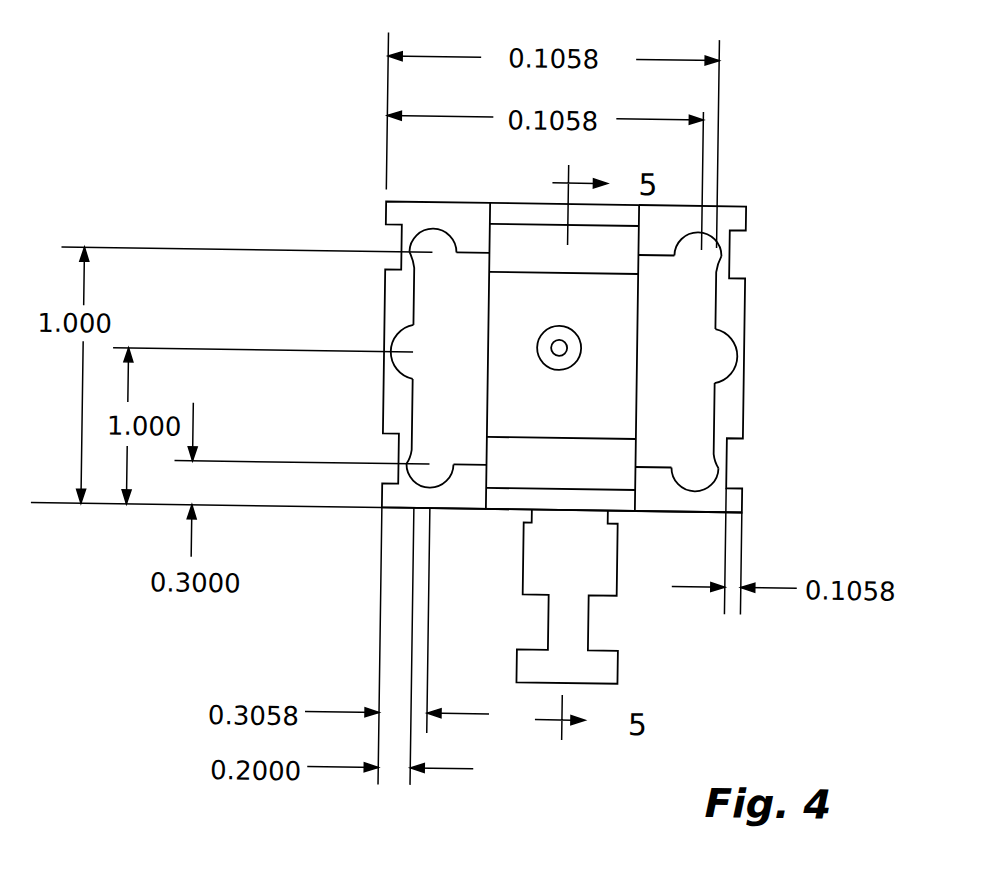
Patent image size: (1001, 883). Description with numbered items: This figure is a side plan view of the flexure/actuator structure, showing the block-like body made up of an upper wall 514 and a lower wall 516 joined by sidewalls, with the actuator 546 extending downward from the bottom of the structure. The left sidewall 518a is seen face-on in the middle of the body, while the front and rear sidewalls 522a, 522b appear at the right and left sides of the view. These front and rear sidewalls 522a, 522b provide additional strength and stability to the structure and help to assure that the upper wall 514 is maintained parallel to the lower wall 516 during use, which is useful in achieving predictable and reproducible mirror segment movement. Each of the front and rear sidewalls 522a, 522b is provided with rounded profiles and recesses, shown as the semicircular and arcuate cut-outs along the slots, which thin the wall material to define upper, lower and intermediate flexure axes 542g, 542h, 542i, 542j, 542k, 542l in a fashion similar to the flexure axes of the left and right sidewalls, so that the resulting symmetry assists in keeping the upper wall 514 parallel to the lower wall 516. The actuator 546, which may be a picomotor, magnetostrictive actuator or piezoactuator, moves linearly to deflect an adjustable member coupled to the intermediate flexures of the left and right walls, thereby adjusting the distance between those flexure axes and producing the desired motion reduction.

The upper wall 514 is at (459, 217).
The lower wall 516 is at (455, 504).
The left sidewall 518a is at (598, 313).
The front sidewall 522a is at (731, 305).
The rear sidewall 522b is at (394, 300).
The flexure axis 542g is at (411, 249).
The flexure axis 542h is at (720, 241).
The flexure axis 542i is at (404, 470).
The flexure axis 542j is at (725, 476).
The flexure axis 542k is at (390, 345).
The flexure axis 542l is at (738, 356).
The actuator 546 is at (592, 627).